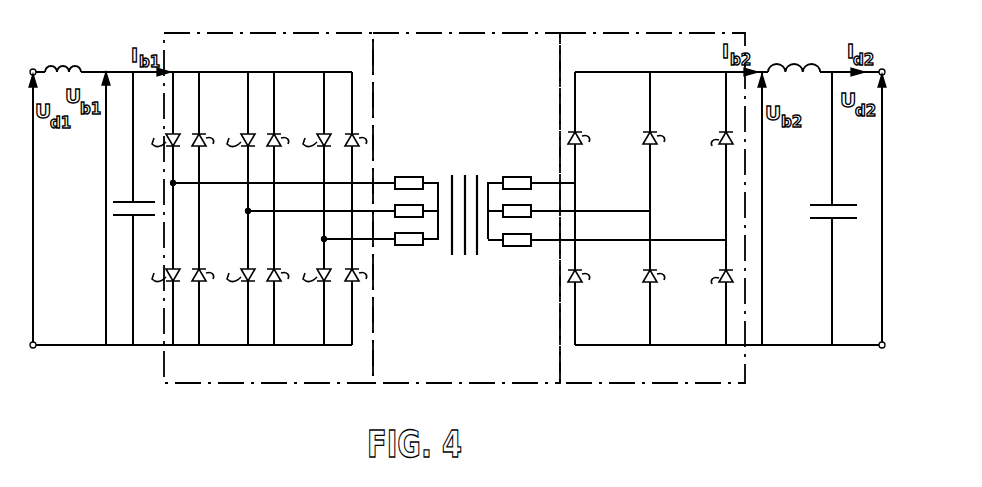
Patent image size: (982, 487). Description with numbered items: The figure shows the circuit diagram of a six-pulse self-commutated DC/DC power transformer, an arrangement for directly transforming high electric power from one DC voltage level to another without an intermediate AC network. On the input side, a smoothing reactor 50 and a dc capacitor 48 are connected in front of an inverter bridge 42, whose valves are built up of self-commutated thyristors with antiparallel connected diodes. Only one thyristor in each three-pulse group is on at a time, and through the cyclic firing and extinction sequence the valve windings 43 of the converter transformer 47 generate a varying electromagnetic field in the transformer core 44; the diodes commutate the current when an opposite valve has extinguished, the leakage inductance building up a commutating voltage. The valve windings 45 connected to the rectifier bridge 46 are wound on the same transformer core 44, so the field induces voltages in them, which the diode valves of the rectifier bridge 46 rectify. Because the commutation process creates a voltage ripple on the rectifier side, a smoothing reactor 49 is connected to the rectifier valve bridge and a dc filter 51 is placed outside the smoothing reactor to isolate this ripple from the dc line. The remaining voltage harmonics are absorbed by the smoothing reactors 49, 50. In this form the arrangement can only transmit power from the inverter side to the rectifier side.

The inverter bridge 42 is at (243, 34).
The valve windings 43 is at (404, 183).
The transformer core 44 is at (465, 255).
The valve windings 45 is at (506, 183).
The rectifier bridge 46 is at (625, 34).
The converter transformer 47 is at (438, 34).
The dc capacitor 48 is at (122, 218).
The smoothing reactor 49 is at (813, 59).
The smoothing reactor 50 is at (56, 53).
The dc filter 51 is at (836, 220).